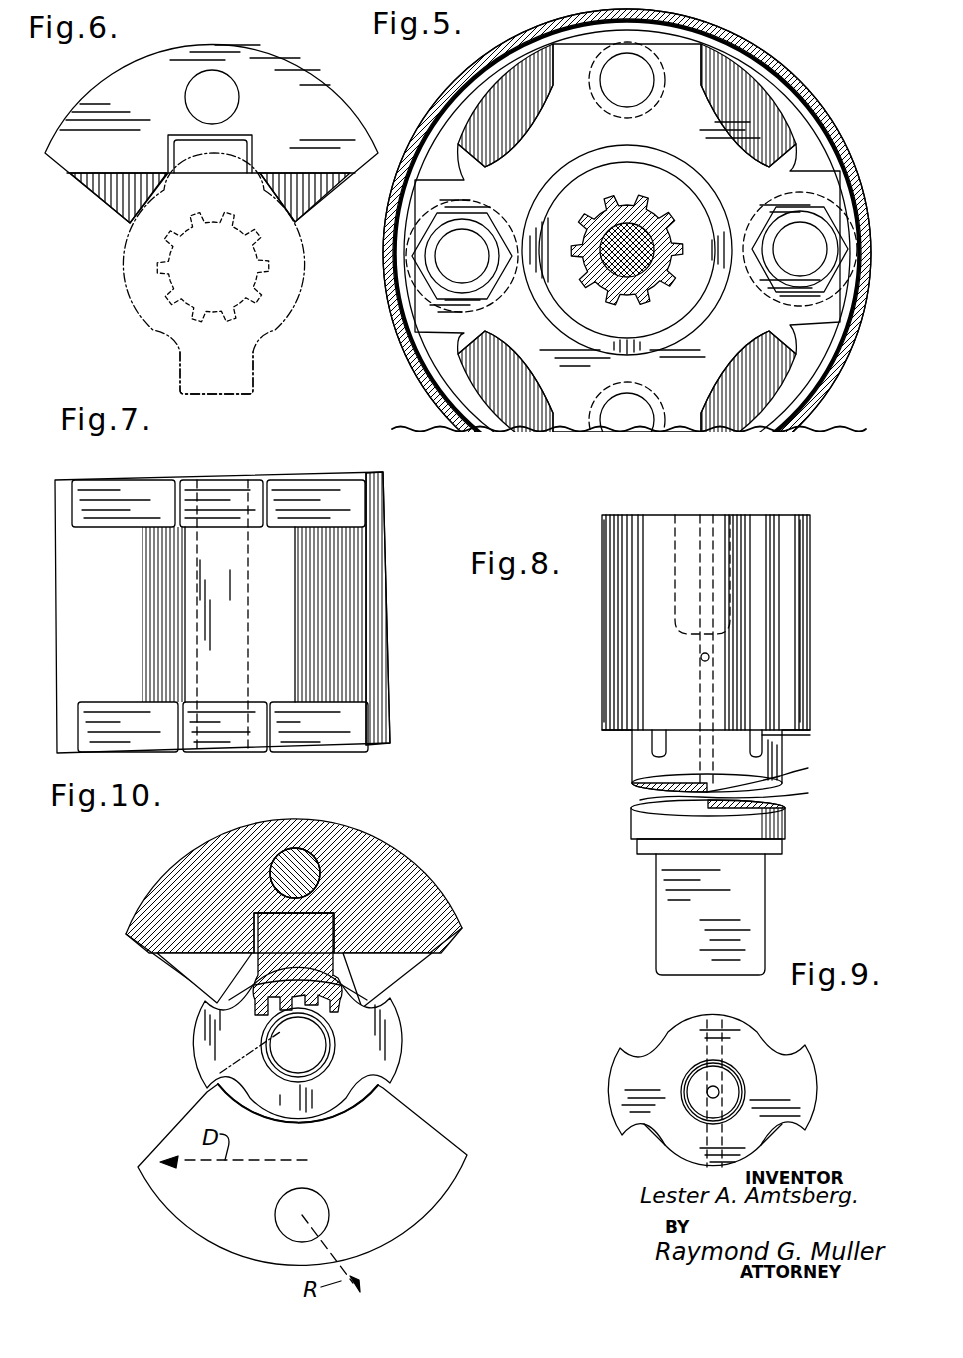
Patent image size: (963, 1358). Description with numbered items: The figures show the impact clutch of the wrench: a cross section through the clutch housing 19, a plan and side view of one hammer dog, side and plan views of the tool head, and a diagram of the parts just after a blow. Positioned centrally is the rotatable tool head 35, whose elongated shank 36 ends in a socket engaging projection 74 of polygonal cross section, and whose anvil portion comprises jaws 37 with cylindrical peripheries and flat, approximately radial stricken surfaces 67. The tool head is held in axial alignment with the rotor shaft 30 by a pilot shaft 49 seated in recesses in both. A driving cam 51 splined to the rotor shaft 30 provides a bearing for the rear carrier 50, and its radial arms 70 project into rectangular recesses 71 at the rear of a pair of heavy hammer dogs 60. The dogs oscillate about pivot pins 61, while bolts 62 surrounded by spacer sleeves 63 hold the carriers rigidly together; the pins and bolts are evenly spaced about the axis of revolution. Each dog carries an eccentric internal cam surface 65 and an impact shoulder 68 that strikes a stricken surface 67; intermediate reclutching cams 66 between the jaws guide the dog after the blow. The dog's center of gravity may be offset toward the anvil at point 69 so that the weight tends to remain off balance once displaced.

In FIG. 5, the clutch housing 19 is at (789, 66).
In FIG. 5, the rotor shaft 30 is at (627, 297).
In FIG. 8, the tool head 35 is at (707, 744).
In FIG. 8, the shank 36 is at (780, 808).
In FIG. 10, the anvil jaws 37 is at (392, 1045).
In FIG. 8, the anvil jaws 37 is at (608, 664).
In FIG. 9, the anvil jaws 37 is at (810, 1080).
In FIG. 5, the pilot shaft 49 is at (630, 237).
In FIG. 5, the rear carrier 50 is at (582, 144).
In FIG. 5, the driving cam 51 is at (657, 173).
In FIG. 6, the driving cam 51 is at (293, 258).
In FIG. 10, the driving cam 51 is at (348, 928).
In FIG. 5, the hammer dogs 60 is at (769, 117).
In FIG. 6, the hammer dogs 60 is at (328, 33).
In FIG. 7, the hammer dogs 60 is at (397, 560).
In FIG. 10, the hammer dogs 60 is at (408, 868).
In FIG. 5, the pivot pins 61 is at (635, 72).
In FIG. 10, the pivot pins 61 is at (301, 852).
In FIG. 5, the bolts 62 is at (465, 240).
In FIG. 5, the spacer sleeve 63 is at (440, 202).
In FIG. 6, the internal cam surface 65 is at (260, 178).
In FIG. 7, the internal cam surface 65 is at (277, 533).
In FIG. 10, the internal cam surface 65 is at (352, 1144).
In FIG. 10, the reclutching cams 66 is at (310, 1117).
In FIG. 8, the reclutching cams 66 is at (730, 695).
In FIG. 9, the reclutching cams 66 is at (727, 998).
In FIG. 10, the stricken surfaces 67 is at (367, 1008).
In FIG. 8, the stricken surfaces 67 is at (776, 548).
In FIG. 9, the stricken surfaces 67 is at (642, 1130).
In FIG. 6, the impact shoulder 68 is at (123, 222).
In FIG. 7, the impact shoulder 68 is at (133, 597).
In FIG. 10, the impact shoulder 68 is at (404, 990).
In FIG. 10, the center of gravity point 69 is at (313, 883).
In FIG. 6, the radial arms 70 is at (187, 367).
In FIG. 6, the recesses 71 is at (238, 135).
In FIG. 7, the recesses 71 is at (227, 485).
In FIG. 10, the recesses 71 is at (256, 936).
In FIG. 8, the socket engaging projection 74 is at (676, 887).